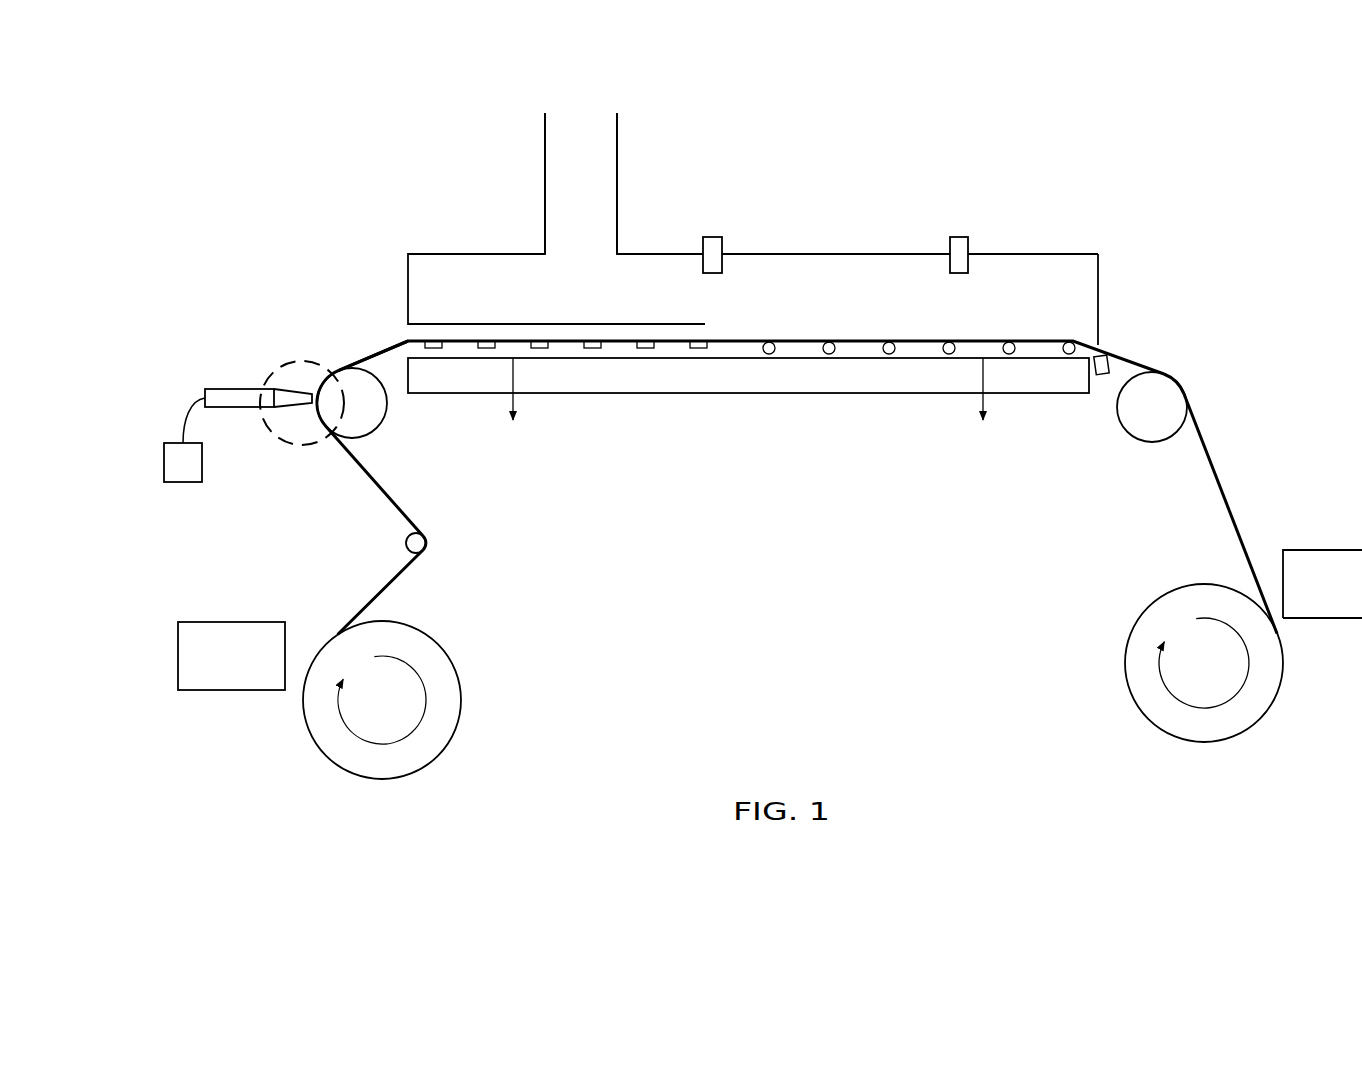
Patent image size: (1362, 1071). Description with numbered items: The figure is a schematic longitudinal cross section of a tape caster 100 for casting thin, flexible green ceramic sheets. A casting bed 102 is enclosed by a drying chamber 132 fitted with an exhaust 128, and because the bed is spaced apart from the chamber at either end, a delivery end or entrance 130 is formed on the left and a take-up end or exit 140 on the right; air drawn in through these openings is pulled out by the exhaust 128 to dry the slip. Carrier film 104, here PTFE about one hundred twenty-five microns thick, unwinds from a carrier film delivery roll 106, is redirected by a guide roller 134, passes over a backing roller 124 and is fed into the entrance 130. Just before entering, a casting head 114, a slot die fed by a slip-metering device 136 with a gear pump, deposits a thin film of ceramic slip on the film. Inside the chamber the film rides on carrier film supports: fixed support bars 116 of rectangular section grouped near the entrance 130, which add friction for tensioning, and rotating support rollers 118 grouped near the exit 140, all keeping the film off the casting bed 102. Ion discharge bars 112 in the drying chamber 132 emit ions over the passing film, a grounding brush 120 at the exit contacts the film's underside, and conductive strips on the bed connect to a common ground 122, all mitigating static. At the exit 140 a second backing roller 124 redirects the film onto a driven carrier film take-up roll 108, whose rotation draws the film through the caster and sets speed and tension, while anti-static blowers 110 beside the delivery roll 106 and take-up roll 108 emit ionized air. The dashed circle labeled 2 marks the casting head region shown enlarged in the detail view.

The tape caster 100 is at (841, 152).
The casting bed 102 is at (755, 396).
The carrier film 104 is at (418, 495).
The carrier film delivery roll 106 is at (478, 680).
The carrier film take-up roll 108 is at (1112, 655).
The anti-static blower 110 is at (225, 606).
The ion discharge bar 112 is at (712, 237).
The casting head 114 is at (218, 362).
The fixed support bar 116 is at (540, 344).
The support roller 118 is at (888, 344).
The grounding brush 120 is at (1105, 375).
The common ground 122 is at (518, 425).
The backing roller 124 is at (410, 421).
The exhaust 128 is at (545, 185).
The entrance 130 is at (397, 330).
The drying chamber 132 is at (408, 262).
The guide roller 134 is at (384, 531).
The slip-metering device 136 is at (164, 461).
The exit 140 is at (1140, 327).
The detail view region of FIG. 2 is at (290, 358).